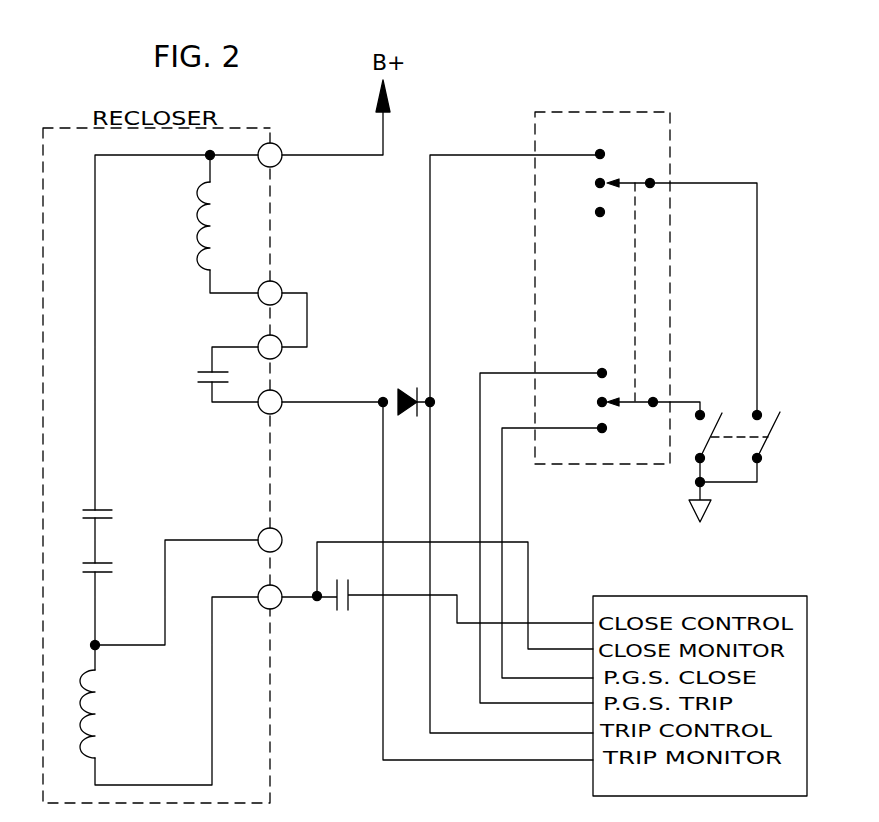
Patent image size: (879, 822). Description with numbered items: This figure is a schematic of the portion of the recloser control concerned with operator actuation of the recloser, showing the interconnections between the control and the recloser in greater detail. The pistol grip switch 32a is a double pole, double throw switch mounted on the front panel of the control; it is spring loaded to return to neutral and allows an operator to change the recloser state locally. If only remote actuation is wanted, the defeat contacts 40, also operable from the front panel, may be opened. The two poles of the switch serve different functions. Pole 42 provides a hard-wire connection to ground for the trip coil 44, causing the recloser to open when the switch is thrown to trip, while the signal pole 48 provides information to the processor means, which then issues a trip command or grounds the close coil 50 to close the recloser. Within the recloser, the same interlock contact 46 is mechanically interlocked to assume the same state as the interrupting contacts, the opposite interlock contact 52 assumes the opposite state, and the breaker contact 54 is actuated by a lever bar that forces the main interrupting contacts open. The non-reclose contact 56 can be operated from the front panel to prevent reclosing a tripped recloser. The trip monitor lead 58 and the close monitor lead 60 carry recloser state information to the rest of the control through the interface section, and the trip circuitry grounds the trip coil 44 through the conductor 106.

The pistol grip switch 32a is at (648, 112).
The defeat contacts 40 is at (735, 443).
The pole 42 is at (628, 180).
The trip coil 44 is at (200, 270).
The same interlock contact 46 is at (198, 377).
The signal pole 48 is at (634, 412).
The close coil 50 is at (93, 742).
The opposite interlock contact 52 is at (103, 507).
The breaker contact 54 is at (103, 563).
The non-reclose contact 56 is at (335, 612).
The trip monitor lead 58 is at (383, 470).
The close monitor lead 60 is at (528, 567).
The conductor 106 is at (432, 700).